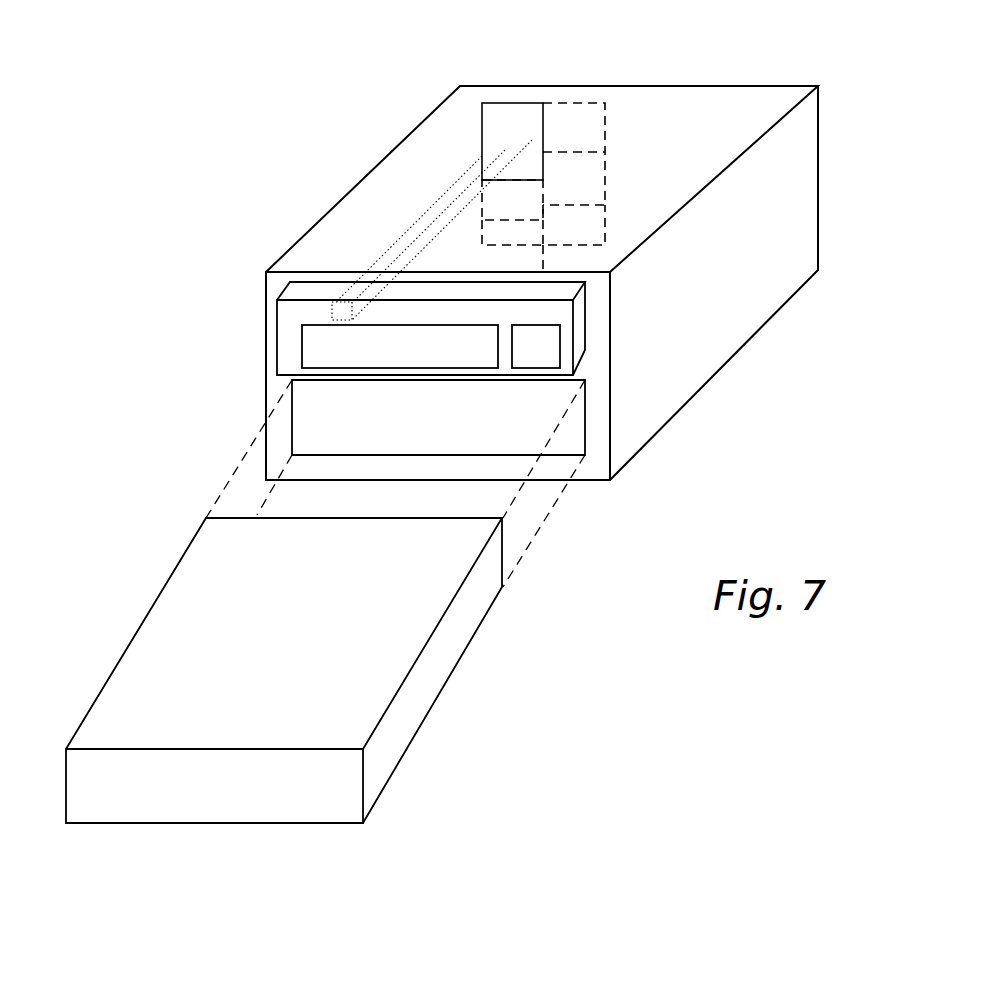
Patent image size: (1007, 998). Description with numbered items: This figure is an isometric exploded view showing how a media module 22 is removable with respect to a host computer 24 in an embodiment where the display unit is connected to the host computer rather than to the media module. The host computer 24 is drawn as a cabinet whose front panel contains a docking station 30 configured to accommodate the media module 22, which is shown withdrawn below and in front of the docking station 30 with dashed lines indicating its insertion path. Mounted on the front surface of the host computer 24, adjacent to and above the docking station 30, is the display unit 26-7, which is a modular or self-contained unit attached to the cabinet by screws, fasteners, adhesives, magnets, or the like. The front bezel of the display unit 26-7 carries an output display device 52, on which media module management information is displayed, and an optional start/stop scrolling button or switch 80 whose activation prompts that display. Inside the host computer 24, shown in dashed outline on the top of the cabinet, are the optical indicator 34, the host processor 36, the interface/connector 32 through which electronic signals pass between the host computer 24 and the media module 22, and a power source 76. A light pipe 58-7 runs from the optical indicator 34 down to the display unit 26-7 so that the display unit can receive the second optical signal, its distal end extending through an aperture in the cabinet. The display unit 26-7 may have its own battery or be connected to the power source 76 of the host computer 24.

The media module 22 is at (448, 653).
The host computer 24 is at (825, 175).
The display unit 26-7 is at (580, 320).
The docking station 30 is at (297, 442).
The interface/connector 32 is at (513, 222).
The optical indicator 34 is at (506, 103).
The host processor 36 is at (562, 152).
The output display device 52 is at (325, 350).
The light pipe 58-7 is at (432, 208).
The power source 76 is at (605, 230).
The start/stop scrolling button or switch 80 is at (537, 348).